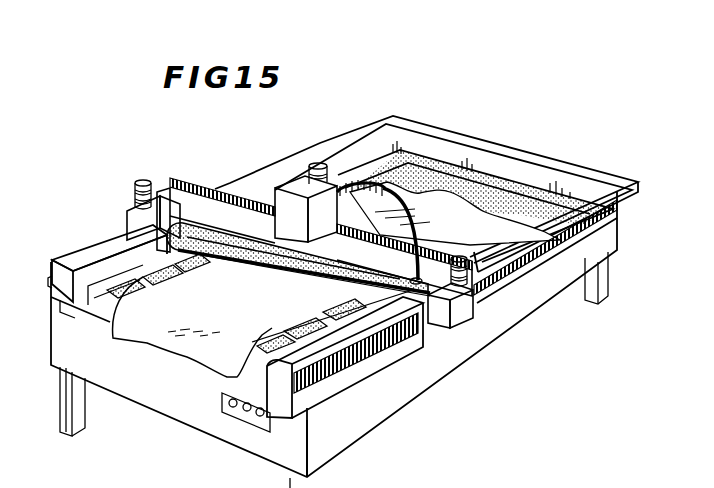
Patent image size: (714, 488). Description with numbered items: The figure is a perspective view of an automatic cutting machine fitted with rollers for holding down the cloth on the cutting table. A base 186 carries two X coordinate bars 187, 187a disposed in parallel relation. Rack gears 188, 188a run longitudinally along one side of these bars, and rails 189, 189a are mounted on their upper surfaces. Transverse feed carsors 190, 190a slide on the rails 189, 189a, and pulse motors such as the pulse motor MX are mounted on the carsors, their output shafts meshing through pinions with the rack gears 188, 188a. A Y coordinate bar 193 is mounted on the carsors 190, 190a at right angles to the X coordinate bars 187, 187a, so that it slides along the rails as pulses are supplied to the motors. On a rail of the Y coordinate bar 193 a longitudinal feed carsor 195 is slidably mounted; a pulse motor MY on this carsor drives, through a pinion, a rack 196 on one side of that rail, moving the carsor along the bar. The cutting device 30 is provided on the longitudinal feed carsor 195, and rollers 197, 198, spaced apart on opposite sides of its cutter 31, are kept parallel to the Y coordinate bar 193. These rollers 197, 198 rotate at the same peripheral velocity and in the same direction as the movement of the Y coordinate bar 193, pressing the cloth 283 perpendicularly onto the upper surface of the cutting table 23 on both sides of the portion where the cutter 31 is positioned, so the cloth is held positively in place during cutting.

The base 186 is at (175, 412).
The X coordinate bar 187 is at (283, 430).
The X coordinate bar 187a is at (78, 304).
The rack gear 188 is at (382, 340).
The rack gear 188a is at (48, 278).
The rail 189 is at (310, 368).
The rail 189a is at (110, 245).
The transverse feed carsor 190 is at (475, 340).
The transverse feed carsor 190a is at (136, 214).
The Y coordinate bar 193 is at (220, 193).
The longitudinal feed carsor 195 is at (297, 188).
The rack 196 is at (196, 179).
The roller 197 is at (247, 256).
The roller 198 is at (222, 258).
The cutting table 23 is at (140, 287).
The cloth 283 is at (152, 346).
The cutting device 30 is at (272, 278).
The cutter 31 is at (288, 278).
The pulse motor MX is at (142, 189).
The pulse motor MY is at (314, 160).